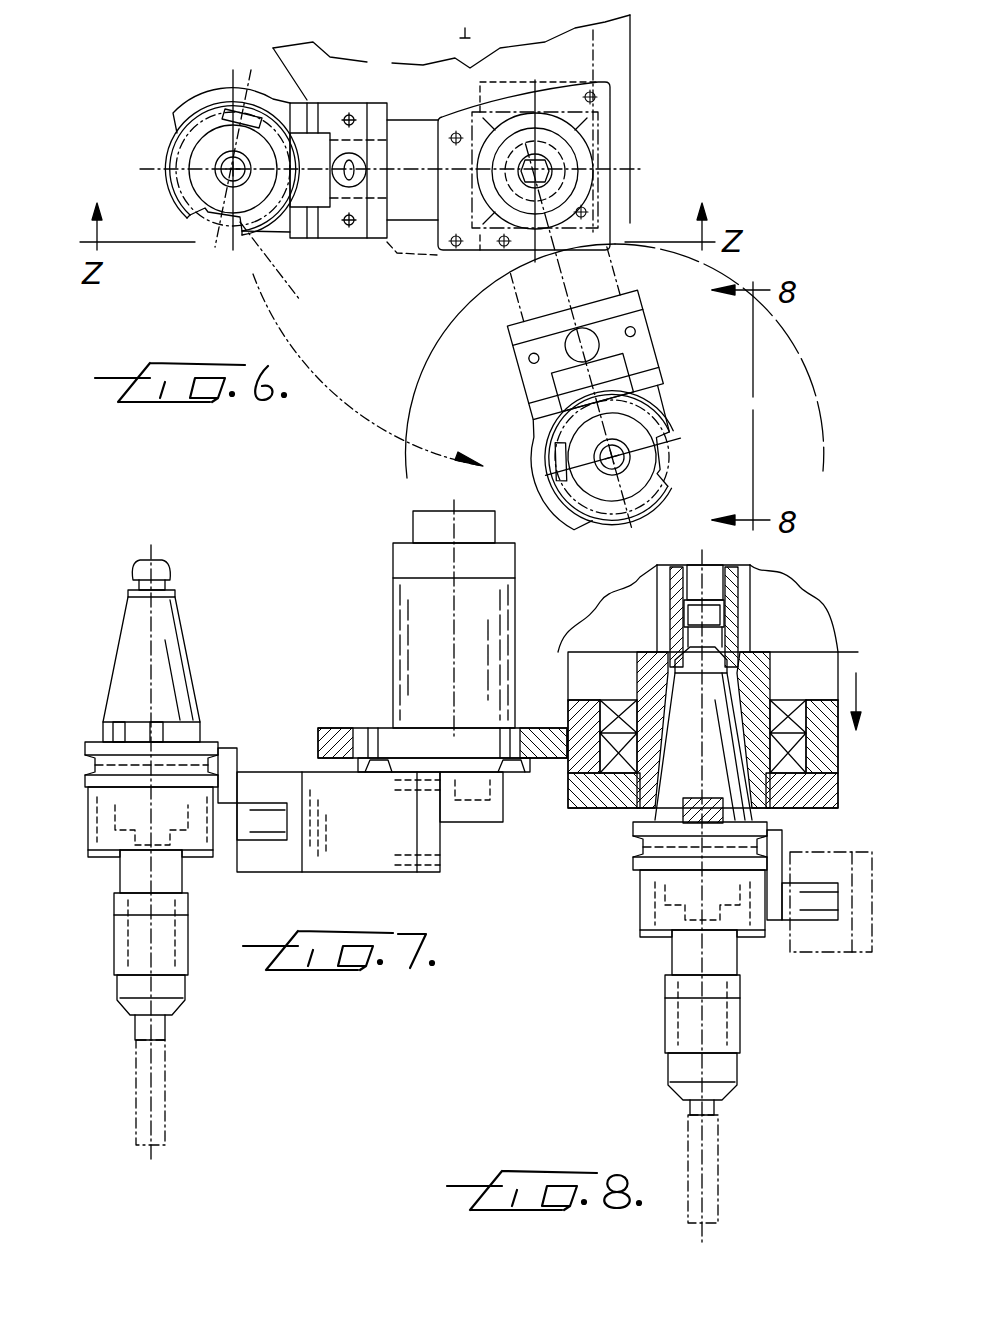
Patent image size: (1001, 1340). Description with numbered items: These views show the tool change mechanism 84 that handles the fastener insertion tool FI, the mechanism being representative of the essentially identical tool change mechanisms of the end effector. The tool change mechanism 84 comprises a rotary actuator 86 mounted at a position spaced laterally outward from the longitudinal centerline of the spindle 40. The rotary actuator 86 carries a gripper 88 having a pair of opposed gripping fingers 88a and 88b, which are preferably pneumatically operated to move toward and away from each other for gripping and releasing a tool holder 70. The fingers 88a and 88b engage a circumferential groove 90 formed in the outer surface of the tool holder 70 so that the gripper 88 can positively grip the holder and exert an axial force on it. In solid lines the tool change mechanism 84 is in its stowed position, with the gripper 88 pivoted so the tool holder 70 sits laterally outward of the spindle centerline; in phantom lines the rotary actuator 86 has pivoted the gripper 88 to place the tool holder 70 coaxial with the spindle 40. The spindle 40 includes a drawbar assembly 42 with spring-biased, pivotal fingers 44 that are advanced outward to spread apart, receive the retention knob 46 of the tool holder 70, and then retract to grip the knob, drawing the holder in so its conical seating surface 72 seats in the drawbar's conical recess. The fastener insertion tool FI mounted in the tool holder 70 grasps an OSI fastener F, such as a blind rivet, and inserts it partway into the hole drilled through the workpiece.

In FIG. 6, the spindle 40 is at (446, 328).
In FIG. 8, the spindle 40 is at (606, 622).
In FIG. 8, the drawbar assembly 42 is at (745, 632).
In FIG. 8, the fingers 44 is at (735, 655).
In FIG. 8, the retention knob 46 is at (690, 648).
In FIG. 7, the tool holder 70 is at (148, 800).
In FIG. 8, the tool holder 70 is at (647, 948).
In FIG. 7, the conical seating surface 72 is at (190, 655).
In FIG. 8, the conical seating surface 72 is at (660, 728).
In FIG. 6, the tool change mechanism 84 is at (441, 118).
In FIG. 7, the tool change mechanism 84 is at (440, 872).
In FIG. 6, the rotary actuator 86 is at (618, 128).
In FIG. 7, the rotary actuator 86 is at (395, 692).
In FIG. 6, the gripper 88 is at (321, 98).
In FIG. 7, the gripper 88 is at (293, 874).
In FIG. 6, the gripping finger 88a is at (205, 93).
In FIG. 6, the gripping finger 88b is at (287, 232).
In FIG. 7, the circumferential groove 90 is at (90, 762).
In FIG. 7, the fastener F is at (160, 1085).
In FIG. 7, the fastener insertion tool FI is at (112, 943).